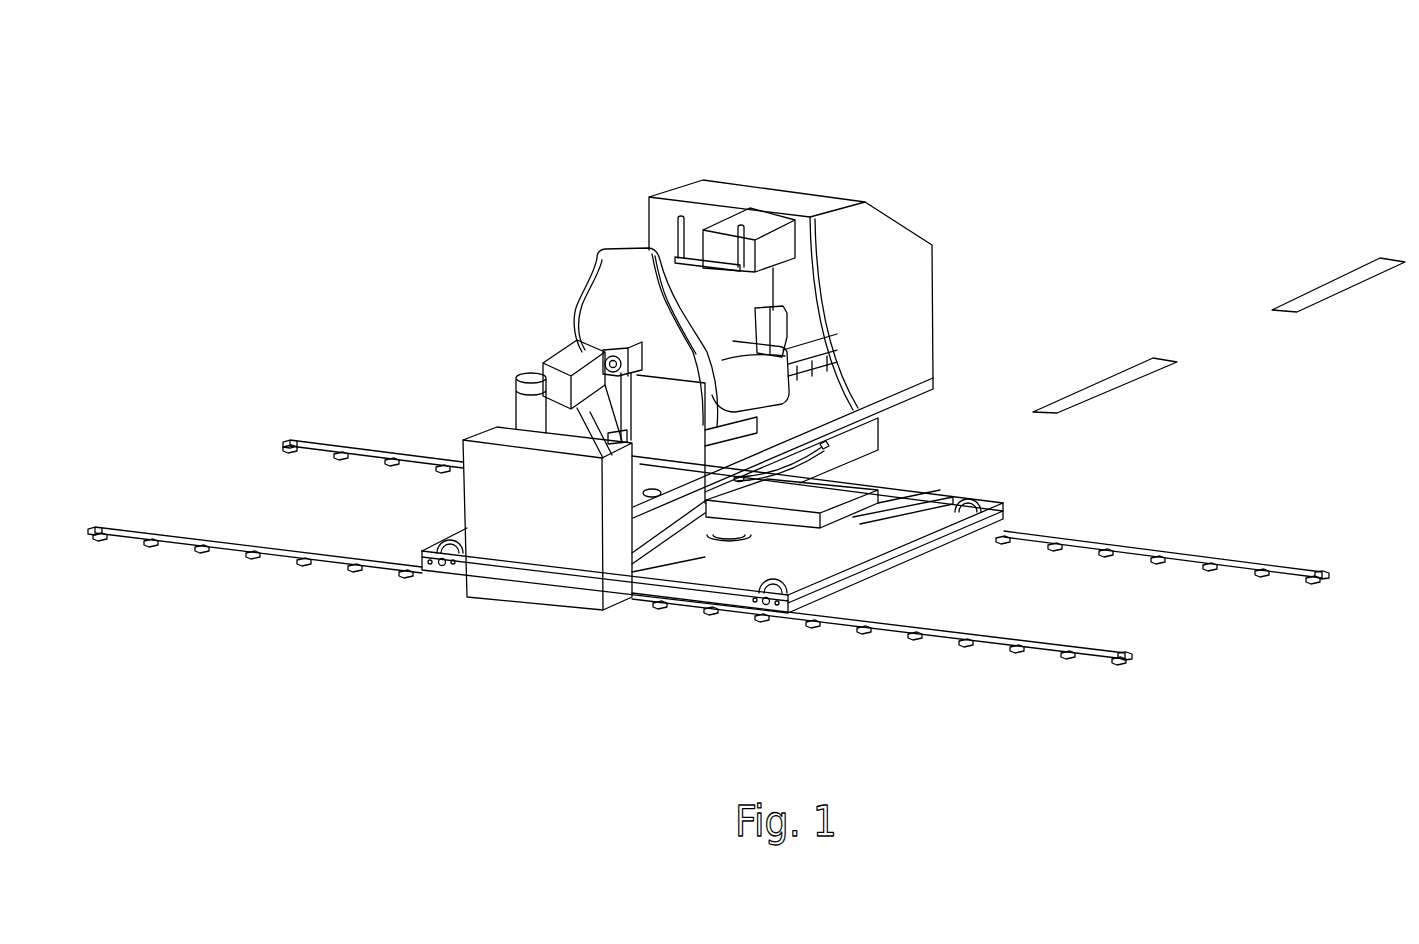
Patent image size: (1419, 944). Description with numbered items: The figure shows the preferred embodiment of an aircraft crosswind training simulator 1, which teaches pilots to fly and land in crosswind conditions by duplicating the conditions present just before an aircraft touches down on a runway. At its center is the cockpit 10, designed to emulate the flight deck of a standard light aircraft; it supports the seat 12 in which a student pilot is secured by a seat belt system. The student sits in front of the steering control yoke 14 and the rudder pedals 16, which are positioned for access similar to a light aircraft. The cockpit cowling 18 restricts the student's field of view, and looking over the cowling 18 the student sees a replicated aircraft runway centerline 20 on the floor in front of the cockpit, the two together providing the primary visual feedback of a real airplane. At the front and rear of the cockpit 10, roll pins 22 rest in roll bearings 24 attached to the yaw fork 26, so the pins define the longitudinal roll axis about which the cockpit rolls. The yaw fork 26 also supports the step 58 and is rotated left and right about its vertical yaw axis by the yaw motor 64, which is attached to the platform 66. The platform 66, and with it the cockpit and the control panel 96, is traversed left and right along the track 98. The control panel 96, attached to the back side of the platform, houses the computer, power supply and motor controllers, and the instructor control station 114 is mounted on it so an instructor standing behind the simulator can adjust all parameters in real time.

The aircraft crosswind training simulator 1 is at (590, 93).
The cockpit 10 is at (915, 392).
The seat 12 is at (620, 258).
The steering control yoke 14 is at (680, 232).
The rudder pedals 16 is at (785, 317).
The cockpit cowling 18 is at (873, 226).
The replicated aircraft runway centerline 20 is at (1117, 373).
The roll pins 22 is at (612, 352).
The roll bearings 24 is at (603, 362).
The yaw fork 26 is at (866, 448).
The step 58 is at (803, 520).
The yaw motor 64 is at (527, 390).
The platform 66 is at (918, 546).
The control panel 96 is at (538, 580).
The track 98 is at (1183, 556).
The instructor control station 114 is at (578, 385).